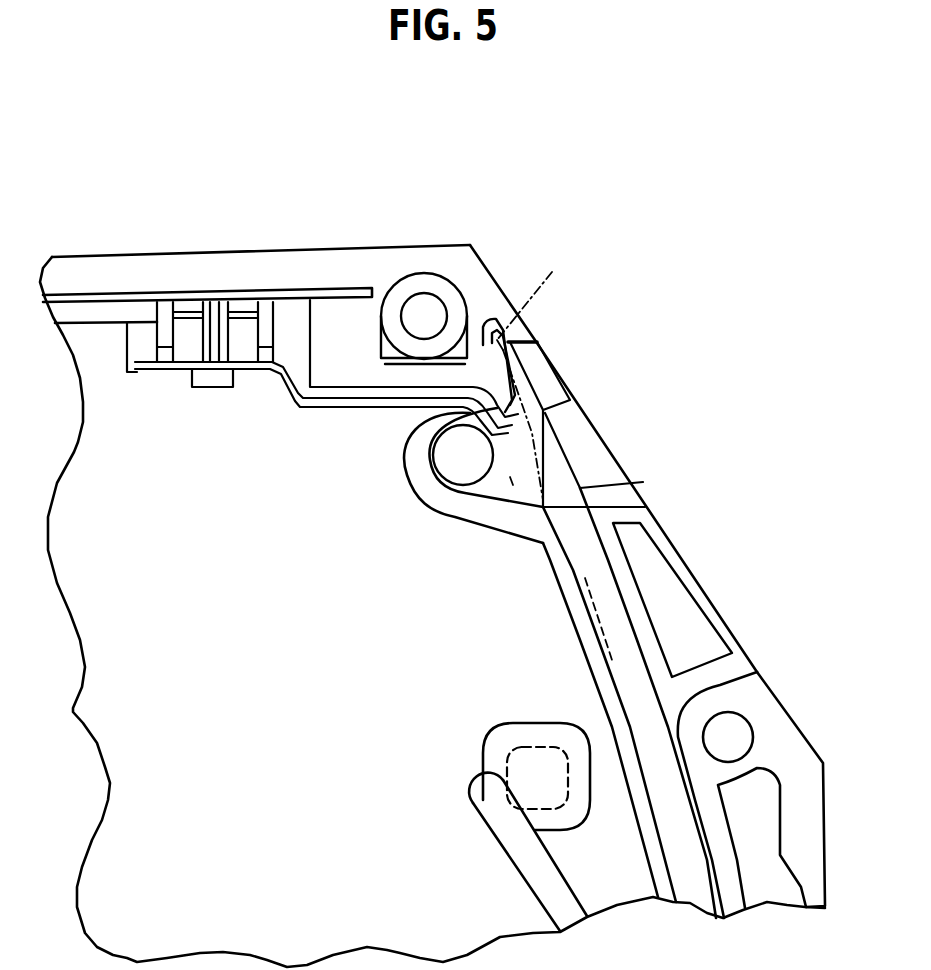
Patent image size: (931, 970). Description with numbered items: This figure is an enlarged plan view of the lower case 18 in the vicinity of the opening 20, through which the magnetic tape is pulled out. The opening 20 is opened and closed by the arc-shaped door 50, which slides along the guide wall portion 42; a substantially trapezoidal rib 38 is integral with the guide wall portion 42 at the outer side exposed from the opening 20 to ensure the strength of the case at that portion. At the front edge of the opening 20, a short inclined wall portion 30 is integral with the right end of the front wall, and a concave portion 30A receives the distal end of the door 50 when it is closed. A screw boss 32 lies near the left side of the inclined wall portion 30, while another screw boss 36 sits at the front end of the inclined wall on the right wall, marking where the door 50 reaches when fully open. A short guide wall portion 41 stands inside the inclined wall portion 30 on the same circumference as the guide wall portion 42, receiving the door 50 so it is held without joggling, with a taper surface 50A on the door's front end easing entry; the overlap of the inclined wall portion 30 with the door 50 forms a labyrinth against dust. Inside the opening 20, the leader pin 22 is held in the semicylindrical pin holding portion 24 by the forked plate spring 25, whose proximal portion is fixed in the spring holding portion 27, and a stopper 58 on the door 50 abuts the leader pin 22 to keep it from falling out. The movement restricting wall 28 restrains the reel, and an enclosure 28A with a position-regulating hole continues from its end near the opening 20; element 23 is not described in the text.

The lower case 18 is at (517, 224).
The opening 20 is at (630, 429).
The leader pin 22 is at (475, 457).
The retainer box 23 is at (302, 380).
The pin holding portion 24 is at (410, 482).
The plate spring 25 is at (368, 407).
The spring holding portion 27 is at (157, 348).
The movement restricting wall 28 is at (503, 853).
The enclosure 28A is at (493, 747).
The inclined wall portion 30 is at (533, 340).
The concave portion 30A is at (490, 327).
The screw boss 32 is at (423, 310).
The screw boss 36 is at (733, 725).
The rib 38 is at (705, 600).
The guide wall portion 41 is at (553, 385).
The guide wall portion 42 is at (623, 573).
The door 50 is at (643, 482).
The taper surface 50A is at (551, 293).
The stopper 58 is at (510, 477).